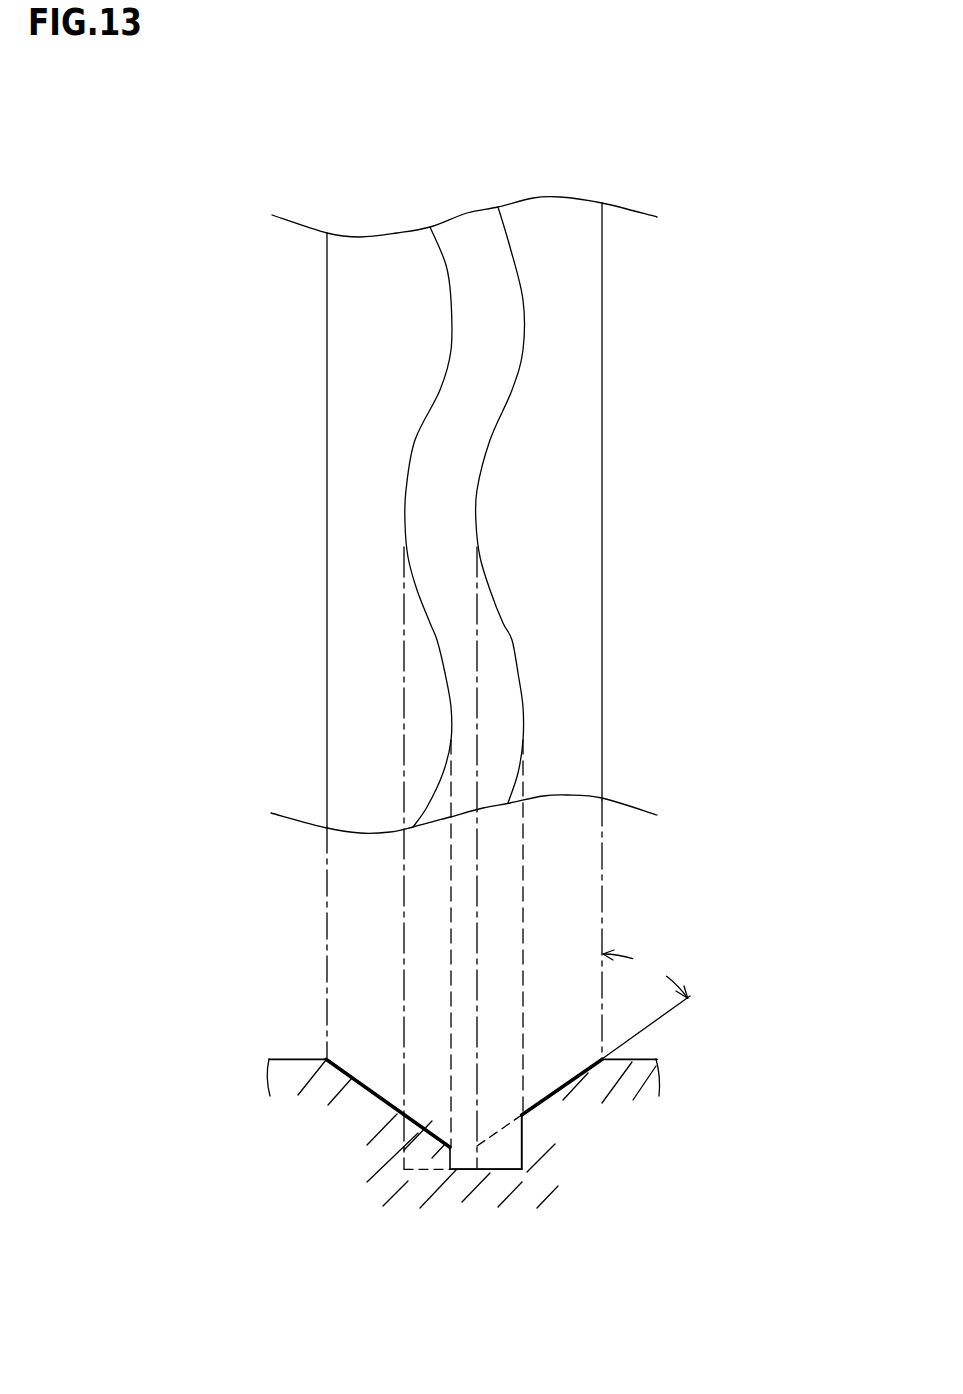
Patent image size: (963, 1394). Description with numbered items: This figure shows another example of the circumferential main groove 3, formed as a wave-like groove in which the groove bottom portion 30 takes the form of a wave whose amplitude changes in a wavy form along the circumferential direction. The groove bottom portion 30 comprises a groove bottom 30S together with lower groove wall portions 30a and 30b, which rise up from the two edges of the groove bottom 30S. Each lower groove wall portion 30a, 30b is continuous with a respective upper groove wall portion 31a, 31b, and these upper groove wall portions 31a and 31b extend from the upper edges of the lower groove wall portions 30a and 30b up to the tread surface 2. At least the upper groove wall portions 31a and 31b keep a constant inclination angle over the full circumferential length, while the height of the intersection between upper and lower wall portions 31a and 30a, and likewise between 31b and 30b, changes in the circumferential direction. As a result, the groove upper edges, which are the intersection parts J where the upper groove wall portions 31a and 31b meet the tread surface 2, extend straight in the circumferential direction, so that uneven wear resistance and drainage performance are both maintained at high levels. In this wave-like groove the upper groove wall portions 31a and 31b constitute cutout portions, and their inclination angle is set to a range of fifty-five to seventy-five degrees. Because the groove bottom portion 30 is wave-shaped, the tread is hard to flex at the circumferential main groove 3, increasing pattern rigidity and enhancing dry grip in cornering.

The circumferential main groove 3 is at (453, 180).
The groove bottom portion 30 is at (507, 313).
The groove bottom 30S is at (501, 1169).
The lower groove wall portion 30a is at (461, 1169).
The lower groove wall portion 30b is at (522, 1161).
The upper groove wall portion 31a is at (360, 570).
The upper groove wall portion 31b is at (568, 487).
The intersection part J is at (327, 385).
The tread surface 2 is at (290, 1059).